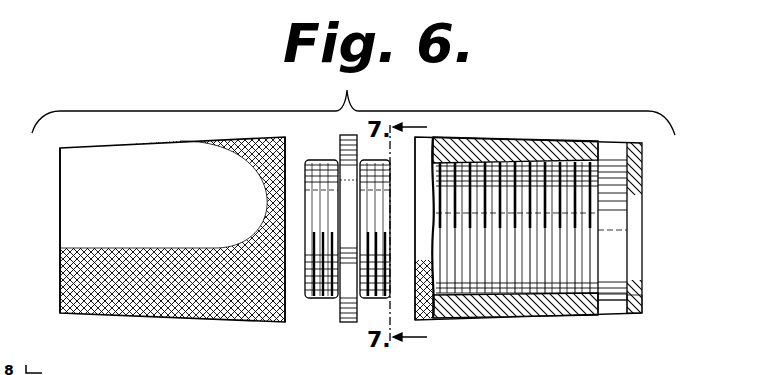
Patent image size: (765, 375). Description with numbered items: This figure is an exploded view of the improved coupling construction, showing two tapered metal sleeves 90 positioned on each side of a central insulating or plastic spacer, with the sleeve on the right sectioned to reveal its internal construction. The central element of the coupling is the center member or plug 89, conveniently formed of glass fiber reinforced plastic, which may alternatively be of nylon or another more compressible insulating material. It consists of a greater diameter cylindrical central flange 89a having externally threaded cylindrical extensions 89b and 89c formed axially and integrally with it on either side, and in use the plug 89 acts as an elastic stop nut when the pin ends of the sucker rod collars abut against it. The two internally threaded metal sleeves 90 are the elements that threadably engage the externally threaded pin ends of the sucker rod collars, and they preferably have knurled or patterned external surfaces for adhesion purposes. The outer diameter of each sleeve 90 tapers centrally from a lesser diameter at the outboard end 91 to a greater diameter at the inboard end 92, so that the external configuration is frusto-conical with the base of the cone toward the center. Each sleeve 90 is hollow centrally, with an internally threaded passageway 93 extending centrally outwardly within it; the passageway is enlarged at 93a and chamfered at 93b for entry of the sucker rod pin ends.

The central element of the coupling 89 is at (385, 241).
The central flange 89a is at (350, 323).
The externally threaded cylindrical extension 89b is at (328, 162).
The externally threaded cylindrical extension 89c is at (378, 172).
The internally threaded metal sleeve 90 is at (173, 140).
The outboard end 91 is at (86, 150).
The inboard end 92 is at (272, 136).
The internally threaded passageway 93 is at (524, 172).
The enlarged portion of passageway 93a is at (618, 297).
The chamfer of passageway 93b is at (636, 300).